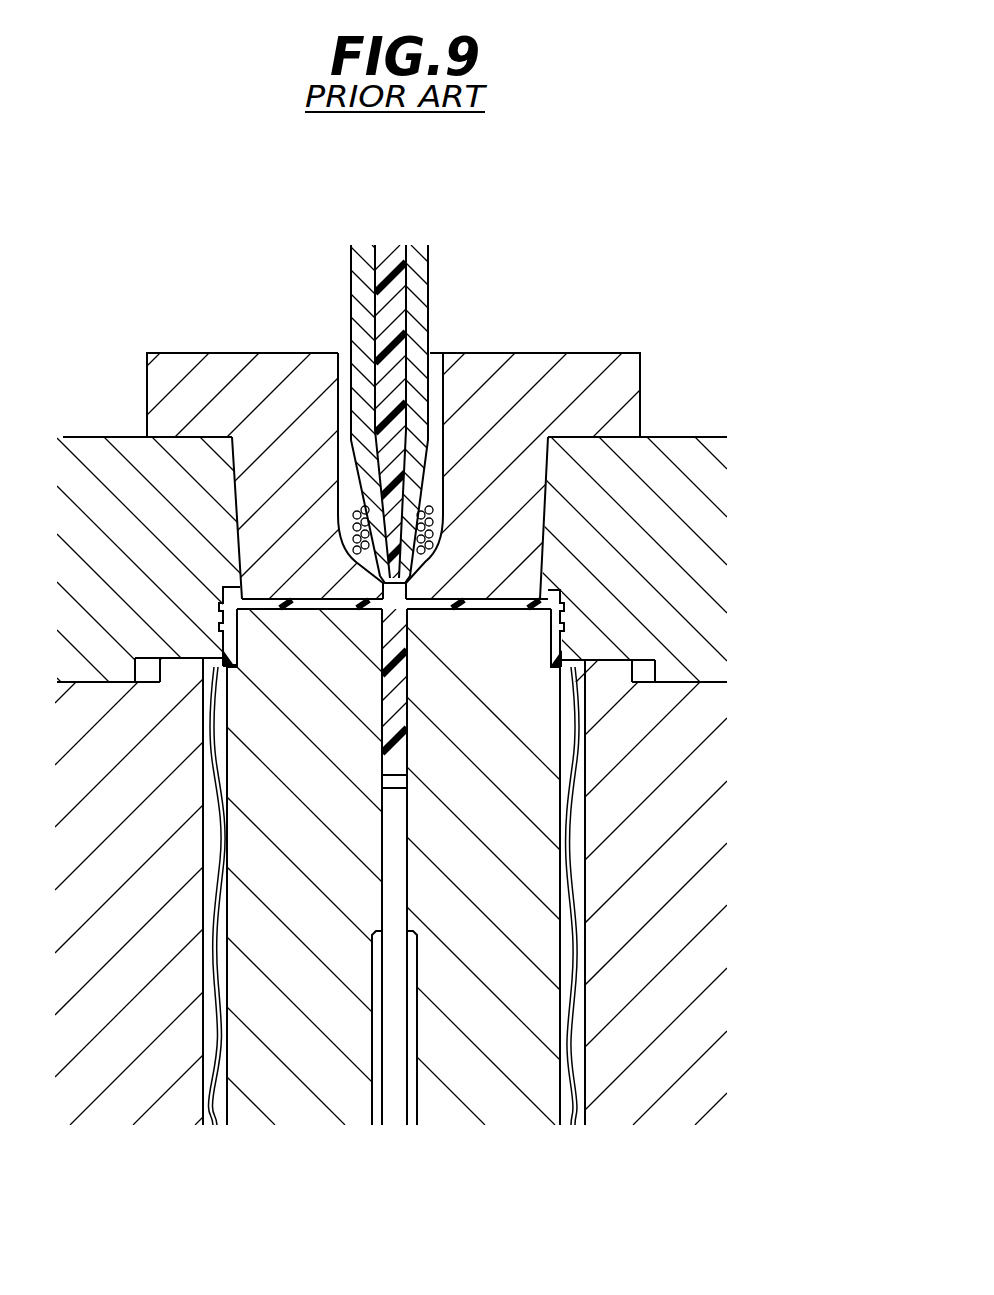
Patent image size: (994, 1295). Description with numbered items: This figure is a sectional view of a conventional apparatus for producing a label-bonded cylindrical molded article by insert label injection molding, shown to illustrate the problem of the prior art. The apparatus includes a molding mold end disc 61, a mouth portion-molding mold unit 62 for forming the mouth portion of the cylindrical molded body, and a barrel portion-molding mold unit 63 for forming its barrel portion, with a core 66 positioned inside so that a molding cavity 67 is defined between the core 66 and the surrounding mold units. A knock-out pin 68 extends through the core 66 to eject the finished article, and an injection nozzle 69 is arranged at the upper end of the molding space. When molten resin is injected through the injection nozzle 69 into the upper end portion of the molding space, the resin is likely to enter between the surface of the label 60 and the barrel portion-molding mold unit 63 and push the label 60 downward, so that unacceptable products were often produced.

The label 60 is at (578, 952).
The molding mold end disc 61 is at (533, 370).
The mouth portion-molding mold unit 62 is at (682, 505).
The barrel portion-molding mold unit 63 is at (668, 803).
The core 66 is at (513, 1050).
The molding cavity 67 is at (578, 878).
The knock-out pin 68 is at (395, 1098).
The injection nozzle 69 is at (417, 260).